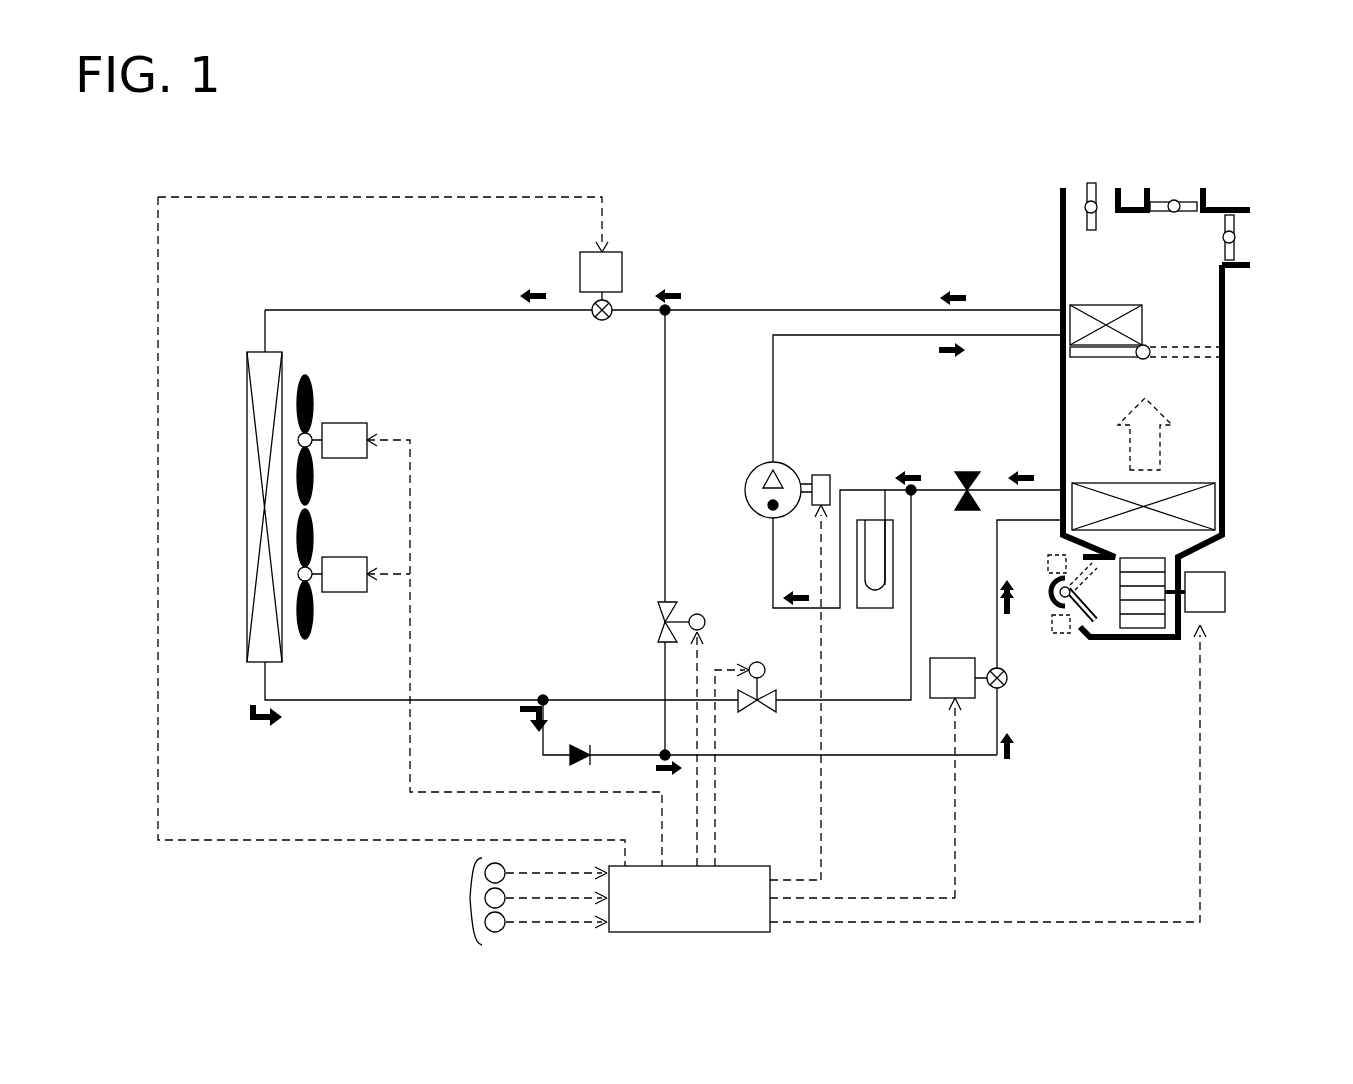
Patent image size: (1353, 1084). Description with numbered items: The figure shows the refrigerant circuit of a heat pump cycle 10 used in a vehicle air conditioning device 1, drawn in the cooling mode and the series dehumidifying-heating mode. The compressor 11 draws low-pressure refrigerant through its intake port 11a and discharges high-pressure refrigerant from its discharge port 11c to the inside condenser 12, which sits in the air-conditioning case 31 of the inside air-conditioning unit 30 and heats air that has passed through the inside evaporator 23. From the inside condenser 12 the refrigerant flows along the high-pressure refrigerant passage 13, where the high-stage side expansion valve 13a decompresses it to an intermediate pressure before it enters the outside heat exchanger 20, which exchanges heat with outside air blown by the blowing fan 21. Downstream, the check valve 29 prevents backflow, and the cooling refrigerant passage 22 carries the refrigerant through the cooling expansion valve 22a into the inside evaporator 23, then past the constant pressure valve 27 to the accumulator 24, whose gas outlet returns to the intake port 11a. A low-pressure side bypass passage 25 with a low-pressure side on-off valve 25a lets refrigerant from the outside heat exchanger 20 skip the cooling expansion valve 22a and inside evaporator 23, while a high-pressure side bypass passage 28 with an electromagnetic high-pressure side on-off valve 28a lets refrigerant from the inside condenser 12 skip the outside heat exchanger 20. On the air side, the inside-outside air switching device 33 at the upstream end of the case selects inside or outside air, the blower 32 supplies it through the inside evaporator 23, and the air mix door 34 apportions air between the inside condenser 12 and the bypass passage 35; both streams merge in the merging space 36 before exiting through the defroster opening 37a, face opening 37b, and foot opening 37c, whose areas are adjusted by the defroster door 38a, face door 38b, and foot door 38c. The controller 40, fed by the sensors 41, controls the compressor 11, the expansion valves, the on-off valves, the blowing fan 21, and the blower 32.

The vehicle air conditioning device 1 is at (896, 192).
The heat pump cycle 10 is at (813, 276).
The compressor 11 is at (776, 453).
The intake port 11a is at (773, 510).
The discharge port 11c is at (778, 466).
The inside condenser 12 is at (1063, 298).
The high-pressure refrigerant passage 13 is at (880, 310).
The high-stage side expansion valve 13a is at (622, 270).
The outside heat exchanger 20 is at (247, 434).
The blowing fan 21 is at (313, 483).
The cooling refrigerant passage 22 is at (882, 758).
The cooling expansion valve 22a is at (952, 656).
The inside evaporator 23 is at (1105, 483).
The accumulator 24 is at (875, 610).
The low-pressure side bypass passage 25 is at (798, 700).
The low-pressure side on-off valve 25a is at (755, 662).
The constant pressure valve 27 is at (962, 470).
The high-pressure side bypass passage 28 is at (665, 358).
The high-pressure side on-off valve 28a is at (728, 595).
The check valve 29 is at (580, 748).
The inside air-conditioning unit 30 is at (1232, 428).
The air-conditioning case 31 is at (1140, 640).
The blower 32 is at (1225, 590).
The inside-outside air switching device 33 is at (1085, 636).
The air mix door 34 is at (1105, 360).
The bypass passage 35 is at (1190, 324).
The merging space 36 is at (1145, 290).
The defroster opening 37a is at (1205, 188).
The face opening 37b is at (1245, 210).
The foot opening 37c is at (1120, 188).
The defroster door 38a is at (1158, 200).
The face door 38b is at (1234, 246).
The foot door 38c is at (1082, 190).
The controller 40 is at (742, 866).
The sensors 41 is at (515, 901).